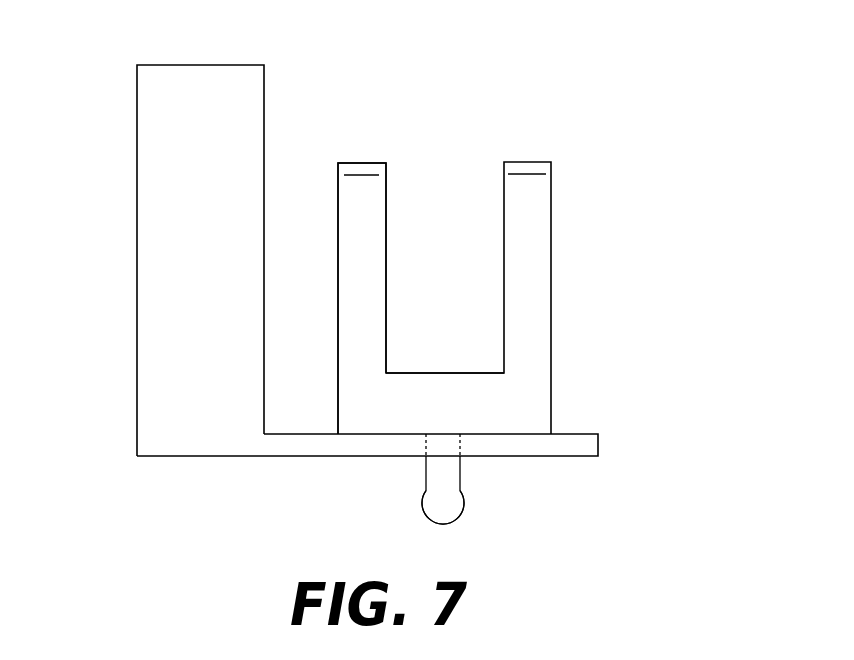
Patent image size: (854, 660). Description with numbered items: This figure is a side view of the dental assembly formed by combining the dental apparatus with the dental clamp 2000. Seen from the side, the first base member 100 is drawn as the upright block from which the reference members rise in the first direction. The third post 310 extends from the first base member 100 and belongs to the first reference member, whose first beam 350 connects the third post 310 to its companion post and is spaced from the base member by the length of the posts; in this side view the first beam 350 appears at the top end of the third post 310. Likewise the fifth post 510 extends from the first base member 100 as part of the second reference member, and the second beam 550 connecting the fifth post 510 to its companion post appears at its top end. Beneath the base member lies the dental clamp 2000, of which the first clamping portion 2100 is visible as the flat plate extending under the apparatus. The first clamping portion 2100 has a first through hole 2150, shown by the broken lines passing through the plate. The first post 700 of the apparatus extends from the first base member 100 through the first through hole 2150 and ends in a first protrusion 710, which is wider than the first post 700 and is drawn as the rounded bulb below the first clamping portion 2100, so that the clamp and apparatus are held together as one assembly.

The dental clamp 2000 is at (113, 166).
The first clamping portion 2100 is at (580, 433).
The first through hole 2150 is at (425, 445).
The third post 310 is at (535, 302).
The fifth post 510 is at (358, 243).
The second beam 550 is at (377, 167).
The first beam 350 is at (535, 170).
The first base member 100 is at (430, 372).
The first post 700 is at (462, 465).
The first protrusion 710 is at (463, 498).